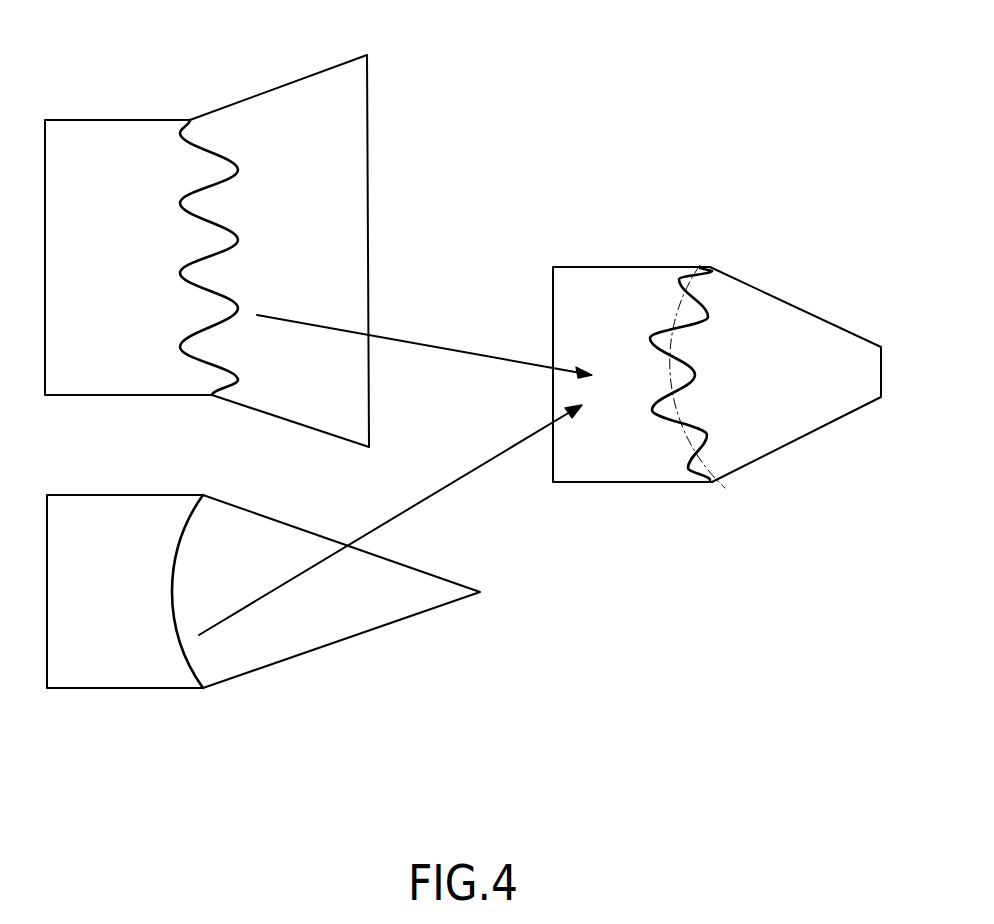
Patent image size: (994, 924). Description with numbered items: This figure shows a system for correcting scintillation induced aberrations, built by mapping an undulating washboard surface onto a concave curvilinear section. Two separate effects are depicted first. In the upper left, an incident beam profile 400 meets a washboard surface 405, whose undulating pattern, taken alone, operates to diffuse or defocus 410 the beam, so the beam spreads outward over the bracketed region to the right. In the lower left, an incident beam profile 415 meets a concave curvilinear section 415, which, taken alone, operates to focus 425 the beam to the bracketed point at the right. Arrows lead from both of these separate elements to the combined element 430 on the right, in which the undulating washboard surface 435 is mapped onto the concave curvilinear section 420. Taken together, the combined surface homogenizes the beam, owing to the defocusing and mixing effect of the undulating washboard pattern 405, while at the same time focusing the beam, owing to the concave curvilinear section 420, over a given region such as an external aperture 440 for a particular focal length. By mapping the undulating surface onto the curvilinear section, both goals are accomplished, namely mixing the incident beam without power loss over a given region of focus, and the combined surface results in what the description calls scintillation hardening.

The incident beam profile 400 is at (83, 132).
The washboard surface 405 is at (190, 125).
The defocus 410 is at (381, 53).
The concave curvilinear section 415 is at (107, 670).
The concave curvilinear section 420 is at (194, 508).
The focus 425 is at (480, 565).
The combined optical element 430 is at (627, 273).
The undulating washboard surface 435 is at (695, 270).
The external aperture region 440 is at (885, 345).